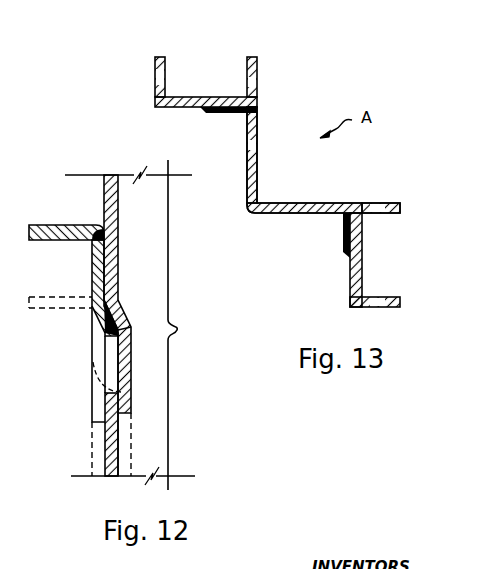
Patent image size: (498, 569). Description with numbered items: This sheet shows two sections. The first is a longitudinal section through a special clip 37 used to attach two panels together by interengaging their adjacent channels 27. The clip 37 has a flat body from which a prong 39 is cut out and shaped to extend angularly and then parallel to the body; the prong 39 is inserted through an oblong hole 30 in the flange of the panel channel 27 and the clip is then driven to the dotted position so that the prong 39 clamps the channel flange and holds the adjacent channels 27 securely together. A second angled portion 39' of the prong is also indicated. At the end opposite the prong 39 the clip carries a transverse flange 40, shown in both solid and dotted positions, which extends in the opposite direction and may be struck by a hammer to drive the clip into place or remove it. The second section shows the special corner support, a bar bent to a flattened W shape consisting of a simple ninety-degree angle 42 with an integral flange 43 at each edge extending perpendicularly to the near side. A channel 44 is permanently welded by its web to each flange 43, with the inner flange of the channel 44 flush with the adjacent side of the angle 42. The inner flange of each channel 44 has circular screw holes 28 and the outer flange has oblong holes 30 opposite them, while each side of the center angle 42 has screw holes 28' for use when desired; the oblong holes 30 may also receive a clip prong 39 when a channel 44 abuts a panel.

In FIG. 12, the channel 27 is at (168, 378).
In FIG. 13, the circular screw hole 28 is at (330, 135).
In FIG. 13, the screw hole 28' is at (303, 155).
In FIG. 12, the oblong hole 30 is at (104, 394).
In FIG. 13, the oblong hole 30 is at (166, 80).
In FIG. 12, the clip 37 is at (92, 265).
In FIG. 12, the prong 39 is at (132, 315).
In FIG. 12, the offset 39' is at (142, 355).
In FIG. 12, the transverse flange 40 is at (64, 225).
In FIG. 13, the angle 42 is at (258, 191).
In FIG. 13, the flange 43 is at (229, 113).
In FIG. 13, the channel 44 is at (200, 97).